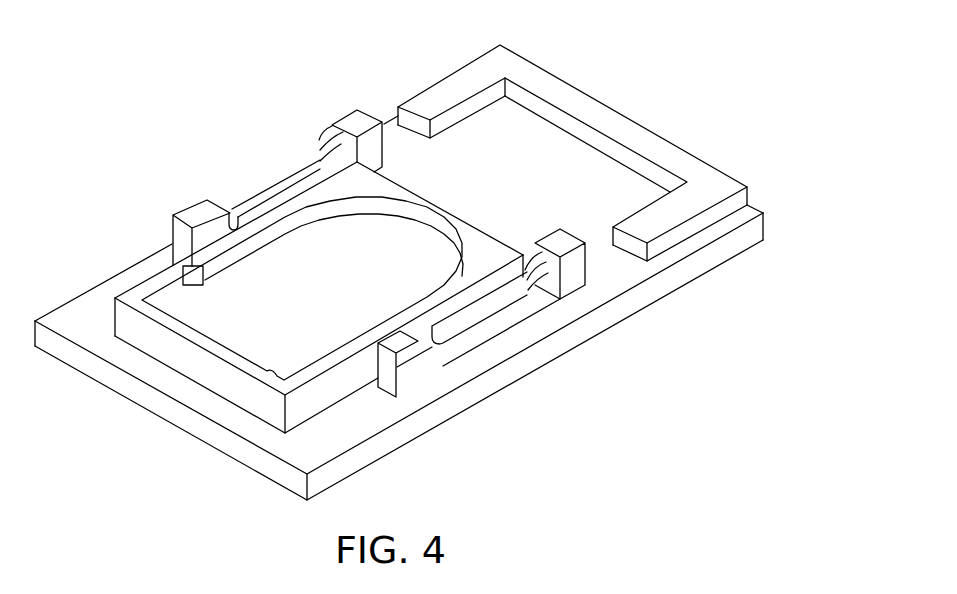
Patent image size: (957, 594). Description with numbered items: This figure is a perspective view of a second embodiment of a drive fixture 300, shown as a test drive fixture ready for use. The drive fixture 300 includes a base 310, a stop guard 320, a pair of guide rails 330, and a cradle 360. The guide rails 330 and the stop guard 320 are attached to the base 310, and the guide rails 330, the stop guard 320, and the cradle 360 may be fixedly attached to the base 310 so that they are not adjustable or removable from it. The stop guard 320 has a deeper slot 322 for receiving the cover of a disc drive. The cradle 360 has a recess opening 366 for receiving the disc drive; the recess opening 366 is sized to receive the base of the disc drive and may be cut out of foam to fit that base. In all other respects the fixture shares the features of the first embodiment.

The drive fixture 300 is at (671, 68).
The base 310 is at (744, 216).
The stop guard 320 is at (564, 143).
The slot 322 is at (519, 128).
The guide rails 330 is at (344, 111).
The cradle 360 is at (283, 385).
The recess opening 366 is at (175, 308).